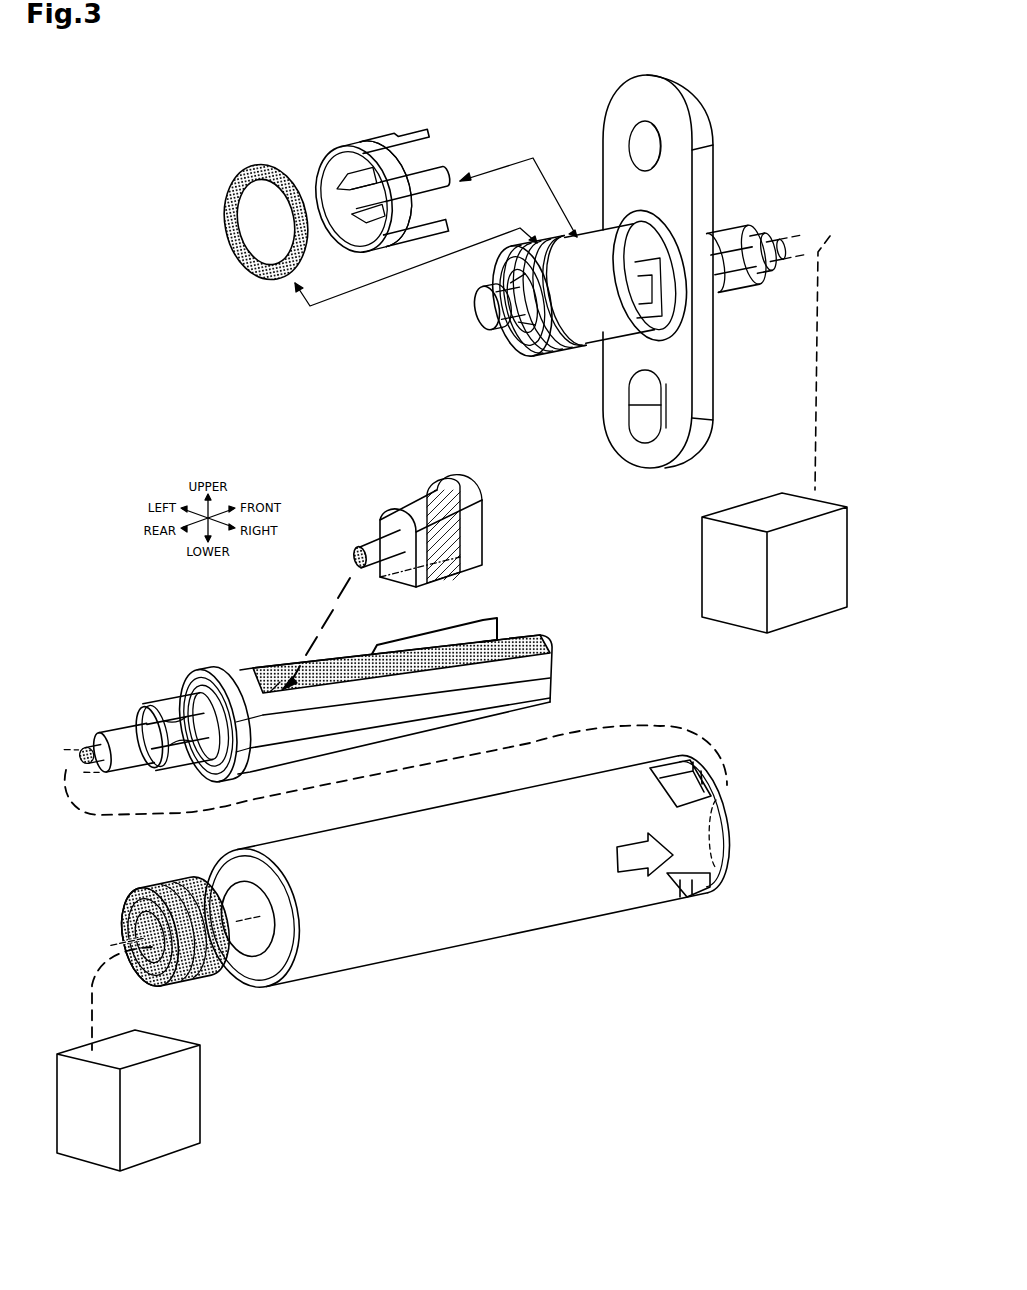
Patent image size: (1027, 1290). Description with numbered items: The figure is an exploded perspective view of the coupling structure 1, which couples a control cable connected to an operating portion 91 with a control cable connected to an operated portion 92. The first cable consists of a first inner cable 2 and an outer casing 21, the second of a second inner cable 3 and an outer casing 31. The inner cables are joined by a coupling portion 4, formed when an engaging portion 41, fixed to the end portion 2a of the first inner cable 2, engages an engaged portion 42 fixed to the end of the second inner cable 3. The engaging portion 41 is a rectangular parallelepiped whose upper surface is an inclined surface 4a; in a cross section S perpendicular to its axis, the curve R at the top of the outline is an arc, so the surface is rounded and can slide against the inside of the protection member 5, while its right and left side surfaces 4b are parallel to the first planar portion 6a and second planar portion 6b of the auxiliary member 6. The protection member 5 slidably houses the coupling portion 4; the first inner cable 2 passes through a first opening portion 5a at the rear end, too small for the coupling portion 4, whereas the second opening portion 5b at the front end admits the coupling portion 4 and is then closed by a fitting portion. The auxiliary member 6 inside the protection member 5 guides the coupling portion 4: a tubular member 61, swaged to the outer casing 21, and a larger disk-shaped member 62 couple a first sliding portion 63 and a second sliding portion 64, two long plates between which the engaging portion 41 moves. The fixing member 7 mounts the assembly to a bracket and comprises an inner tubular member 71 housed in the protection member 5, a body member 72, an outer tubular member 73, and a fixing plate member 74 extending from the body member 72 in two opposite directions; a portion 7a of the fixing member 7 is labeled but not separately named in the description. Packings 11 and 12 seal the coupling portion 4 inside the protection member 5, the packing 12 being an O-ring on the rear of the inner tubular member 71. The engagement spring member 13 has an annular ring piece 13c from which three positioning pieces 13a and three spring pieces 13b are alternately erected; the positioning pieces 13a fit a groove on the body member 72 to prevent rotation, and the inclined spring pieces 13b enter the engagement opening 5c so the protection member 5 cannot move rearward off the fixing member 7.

The coupling structure 1 is at (171, 347).
The first inner cable 2 is at (109, 751).
The end portion 2a is at (357, 555).
The outer casing 21 is at (130, 765).
The second inner cable 3 is at (770, 233).
The outer casing 31 is at (757, 268).
The coupling portion 4 is at (435, 451).
The inclined surface 4a is at (468, 490).
The right and left side surfaces 4b is at (378, 533).
The engaging portion 41 is at (415, 509).
The engaged portion 42 is at (478, 306).
The protection member 5 is at (479, 879).
The first opening portion 5a is at (240, 944).
The second opening portion 5b is at (718, 820).
The engagement opening 5c is at (680, 780).
The auxiliary member 6 is at (360, 690).
The first planar portion 6a is at (463, 637).
The second planar portion 6b is at (522, 636).
The tubular member 61 is at (172, 722).
The disk-shaped member 62 is at (213, 677).
The first sliding portion 63 is at (387, 642).
The second sliding portion 64 is at (533, 679).
The fixing member 7 is at (648, 271).
The receptacle bore 7a is at (520, 340).
The inner tubular member 71 is at (560, 348).
The body member 72 is at (622, 212).
The outer tubular member 73 is at (731, 272).
The fixing plate member 74 is at (614, 110).
The packing 11 is at (132, 904).
The packing 12 is at (224, 194).
The engagement spring member 13 is at (345, 143).
The positioning piece 13a is at (383, 135).
The spring piece 13b is at (343, 176).
The ring piece 13c is at (400, 181).
The operating portion 91 is at (185, 1103).
The operated portion 92 is at (789, 610).
The curve R is at (441, 490).
The cross section S is at (460, 563).